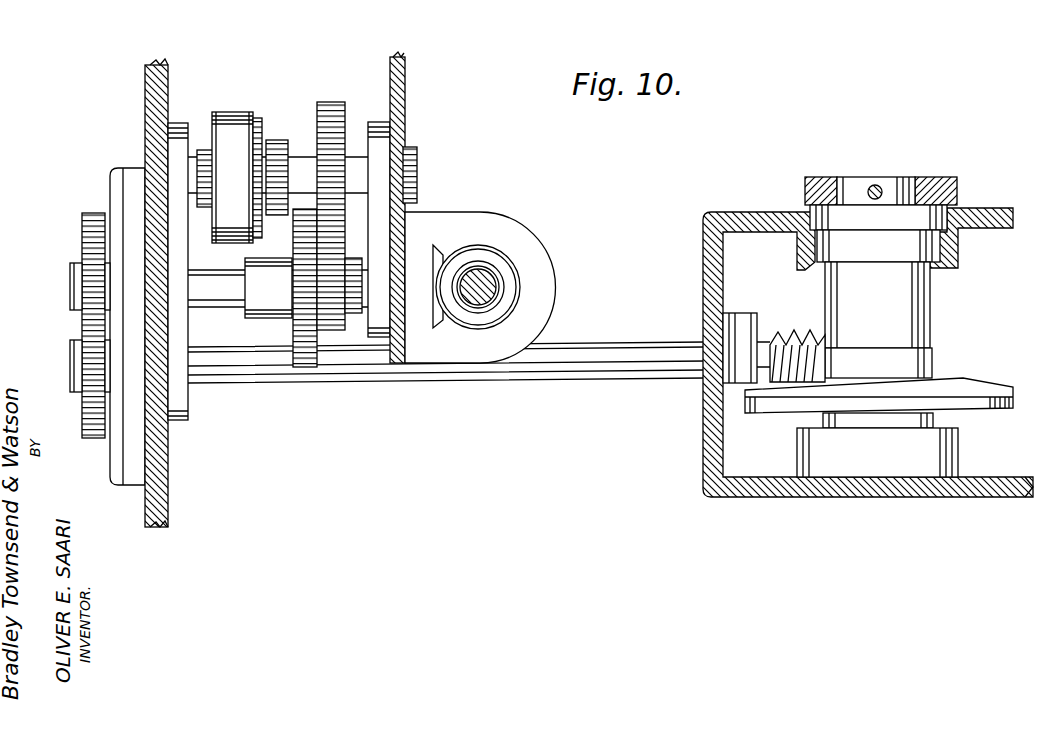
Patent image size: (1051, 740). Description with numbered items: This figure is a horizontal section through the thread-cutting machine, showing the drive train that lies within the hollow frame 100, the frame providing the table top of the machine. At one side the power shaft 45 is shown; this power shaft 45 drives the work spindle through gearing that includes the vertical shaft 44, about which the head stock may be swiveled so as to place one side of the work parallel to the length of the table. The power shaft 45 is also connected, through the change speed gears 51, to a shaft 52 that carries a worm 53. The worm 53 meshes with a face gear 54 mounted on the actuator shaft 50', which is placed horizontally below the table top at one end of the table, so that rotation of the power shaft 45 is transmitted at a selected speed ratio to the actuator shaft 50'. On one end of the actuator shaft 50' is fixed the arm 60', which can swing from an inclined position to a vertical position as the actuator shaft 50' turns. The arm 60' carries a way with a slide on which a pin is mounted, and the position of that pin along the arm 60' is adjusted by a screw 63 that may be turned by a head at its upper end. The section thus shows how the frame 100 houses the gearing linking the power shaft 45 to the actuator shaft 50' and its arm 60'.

The vertical shaft 44 is at (482, 280).
The power shaft 45 is at (222, 290).
The actuator shaft 50' is at (878, 260).
The change speed gears 51 is at (80, 375).
The shaft 52 is at (622, 322).
The worm 53 is at (790, 322).
The face gear 54 is at (955, 373).
The arm 60' is at (903, 171).
The screw 63 is at (870, 188).
The hollow frame 100 is at (162, 483).